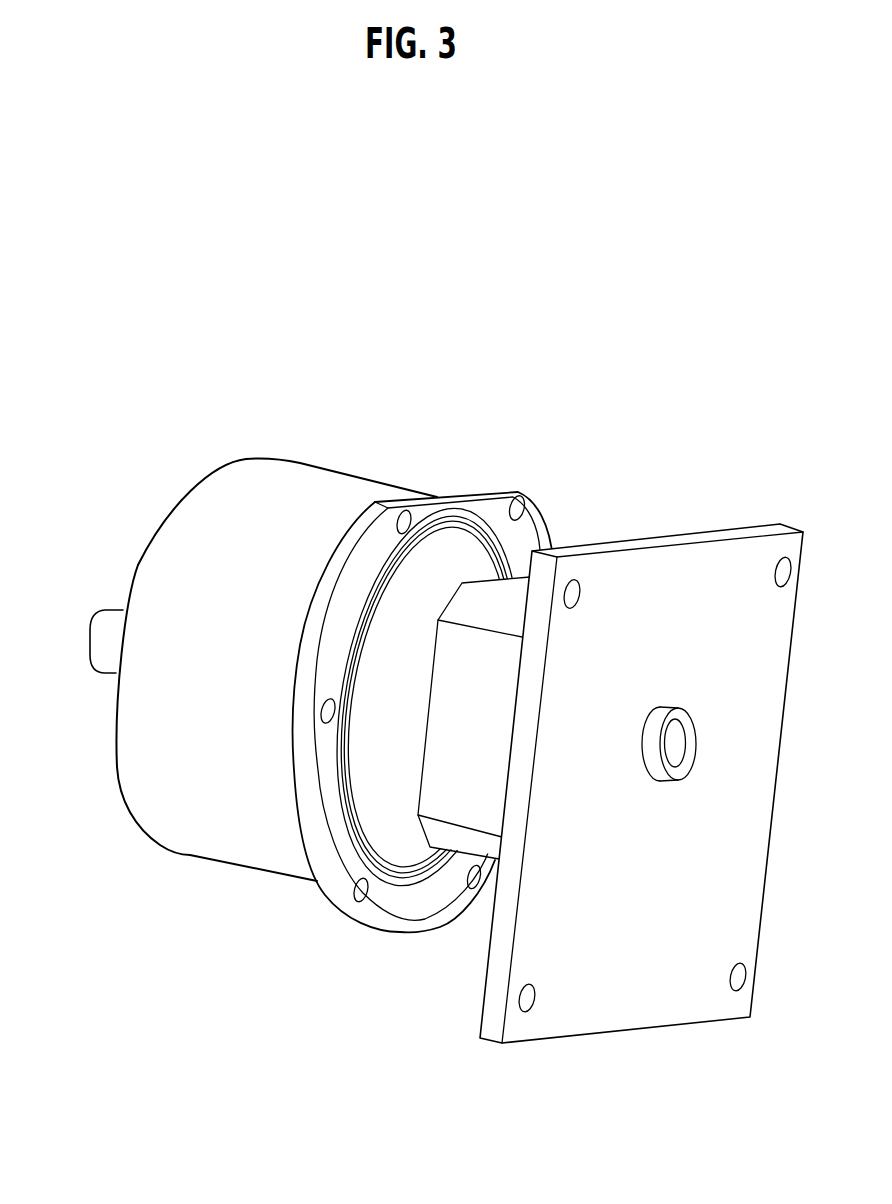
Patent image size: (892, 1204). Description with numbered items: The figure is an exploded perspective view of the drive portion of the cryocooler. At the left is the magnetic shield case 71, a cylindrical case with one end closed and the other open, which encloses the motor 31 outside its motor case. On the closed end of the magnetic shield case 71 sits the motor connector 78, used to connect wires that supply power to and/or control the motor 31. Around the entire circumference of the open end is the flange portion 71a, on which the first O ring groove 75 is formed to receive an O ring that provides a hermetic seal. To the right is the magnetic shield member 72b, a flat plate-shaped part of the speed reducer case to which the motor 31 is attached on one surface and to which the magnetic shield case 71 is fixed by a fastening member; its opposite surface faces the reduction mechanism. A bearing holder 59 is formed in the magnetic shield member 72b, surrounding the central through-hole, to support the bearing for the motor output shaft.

The magnetic shield case 71 is at (304, 462).
The flange portion 71a is at (345, 920).
The first O ring groove 75 is at (455, 518).
The motor connector 78 is at (120, 610).
The motor 31 is at (421, 851).
The magnetic shield member 72b is at (740, 527).
The bearing holder 59 is at (660, 720).